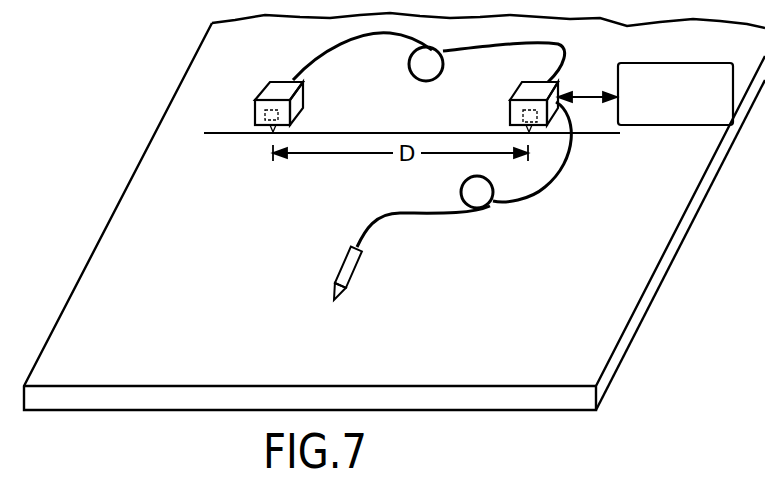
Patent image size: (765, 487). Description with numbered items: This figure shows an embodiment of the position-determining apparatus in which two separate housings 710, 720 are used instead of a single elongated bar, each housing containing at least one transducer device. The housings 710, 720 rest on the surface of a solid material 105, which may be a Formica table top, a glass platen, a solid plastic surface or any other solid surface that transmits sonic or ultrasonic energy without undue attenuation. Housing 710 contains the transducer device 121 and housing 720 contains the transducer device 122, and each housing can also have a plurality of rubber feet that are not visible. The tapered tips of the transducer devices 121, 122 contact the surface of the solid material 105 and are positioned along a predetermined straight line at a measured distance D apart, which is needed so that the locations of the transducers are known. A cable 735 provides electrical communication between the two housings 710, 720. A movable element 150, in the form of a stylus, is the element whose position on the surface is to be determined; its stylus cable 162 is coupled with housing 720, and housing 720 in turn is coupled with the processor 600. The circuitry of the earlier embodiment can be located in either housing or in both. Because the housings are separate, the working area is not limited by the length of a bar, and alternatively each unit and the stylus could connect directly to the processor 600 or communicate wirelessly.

The solid material 105 is at (107, 267).
The transducer device 121 is at (250, 112).
The transducer device 122 is at (510, 113).
The housing 710 is at (250, 87).
The housing 720 is at (533, 92).
The cable 735 is at (364, 40).
The processor 600 is at (687, 63).
The stylus cable 162 is at (538, 187).
The movable element 150 is at (345, 276).